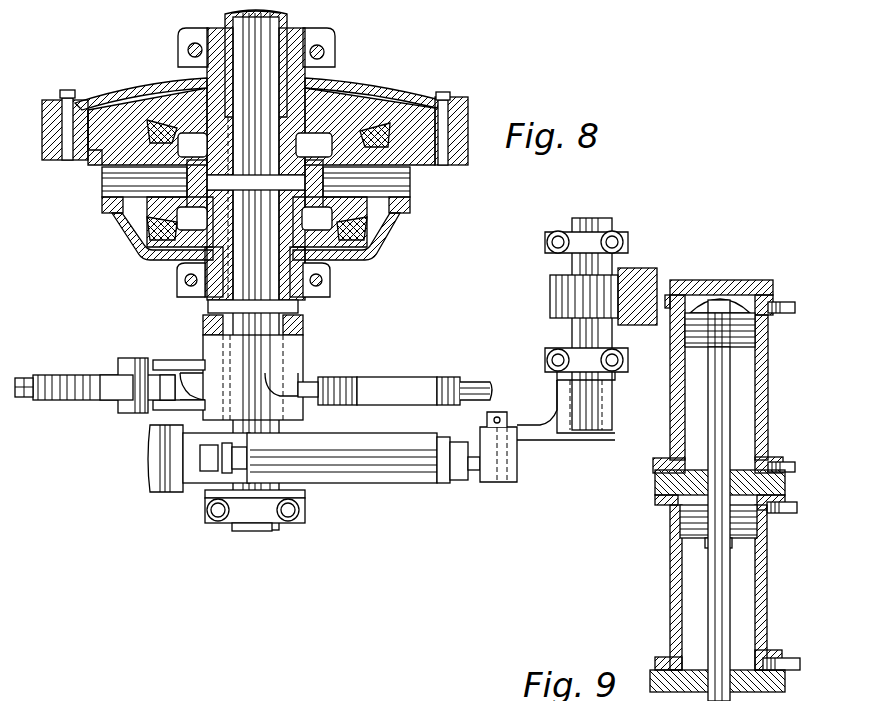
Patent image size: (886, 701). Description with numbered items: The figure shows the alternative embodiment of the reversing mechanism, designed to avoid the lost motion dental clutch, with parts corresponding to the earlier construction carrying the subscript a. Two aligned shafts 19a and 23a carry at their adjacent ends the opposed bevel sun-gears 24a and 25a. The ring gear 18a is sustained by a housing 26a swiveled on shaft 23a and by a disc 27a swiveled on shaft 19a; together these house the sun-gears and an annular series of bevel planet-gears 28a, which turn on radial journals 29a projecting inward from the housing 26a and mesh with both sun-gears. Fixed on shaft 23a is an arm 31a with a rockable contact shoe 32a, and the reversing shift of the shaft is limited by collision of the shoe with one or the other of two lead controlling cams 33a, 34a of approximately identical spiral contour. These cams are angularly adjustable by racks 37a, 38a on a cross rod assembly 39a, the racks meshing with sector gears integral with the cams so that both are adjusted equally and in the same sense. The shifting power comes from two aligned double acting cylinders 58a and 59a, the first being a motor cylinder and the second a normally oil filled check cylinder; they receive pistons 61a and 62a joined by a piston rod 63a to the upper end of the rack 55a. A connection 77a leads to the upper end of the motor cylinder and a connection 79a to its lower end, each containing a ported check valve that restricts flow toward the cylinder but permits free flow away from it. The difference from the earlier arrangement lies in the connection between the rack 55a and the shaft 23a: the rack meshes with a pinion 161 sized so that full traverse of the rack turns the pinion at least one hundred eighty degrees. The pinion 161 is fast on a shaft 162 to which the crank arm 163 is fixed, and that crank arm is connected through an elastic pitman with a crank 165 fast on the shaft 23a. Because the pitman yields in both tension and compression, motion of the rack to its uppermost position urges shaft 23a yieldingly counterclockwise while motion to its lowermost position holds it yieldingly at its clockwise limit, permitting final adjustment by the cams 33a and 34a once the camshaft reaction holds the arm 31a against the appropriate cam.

In FIG. 8, the ring gear 18a is at (473, 112).
In FIG. 8, the shaft 19a is at (283, 15).
In FIG. 8, the shaft 23a is at (222, 291).
In FIG. 8, the bevel sun-gear 24a is at (320, 256).
In FIG. 8, the bevel sun-gear 25a is at (342, 112).
In FIG. 8, the housing 26a is at (376, 236).
In FIG. 8, the disc 27a is at (132, 88).
In FIG. 8, the bevel planet-gear 28a is at (150, 222).
In FIG. 8, the radial journal 29a is at (104, 190).
In FIG. 8, the arm 31a is at (190, 368).
In FIG. 8, the rockable contact shoe 32a is at (110, 375).
In FIG. 8, the lead controlling cam 33a is at (95, 402).
In FIG. 8, the lead controlling cam 34a is at (405, 376).
In FIG. 8, the rack 37a is at (42, 376).
In FIG. 8, the rack 38a is at (337, 376).
In FIG. 8, the cross rod assembly 39a is at (478, 382).
In FIG. 8, the rack 55a is at (640, 260).
In FIG. 9, the motor cylinder 58a is at (748, 424).
In FIG. 9, the check cylinder 59a is at (690, 576).
In FIG. 9, the piston 61a is at (748, 347).
In FIG. 9, the piston 62a is at (758, 545).
In FIG. 9, the piston rod 63a is at (710, 637).
In FIG. 9, the connection 77a is at (787, 302).
In FIG. 9, the connection 79a is at (786, 462).
In FIG. 8, the pinion 161 is at (360, 480).
In FIG. 8, the shaft 162 is at (574, 260).
In FIG. 8, the crank arm 163 is at (533, 435).
In FIG. 8, the crank 165 is at (183, 492).